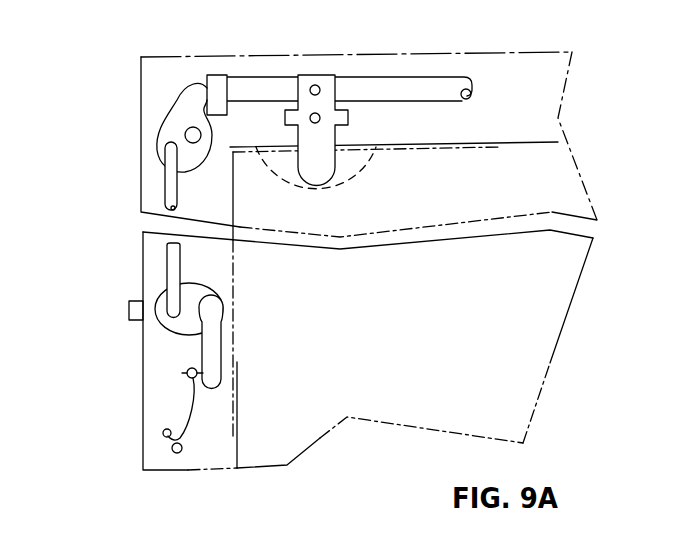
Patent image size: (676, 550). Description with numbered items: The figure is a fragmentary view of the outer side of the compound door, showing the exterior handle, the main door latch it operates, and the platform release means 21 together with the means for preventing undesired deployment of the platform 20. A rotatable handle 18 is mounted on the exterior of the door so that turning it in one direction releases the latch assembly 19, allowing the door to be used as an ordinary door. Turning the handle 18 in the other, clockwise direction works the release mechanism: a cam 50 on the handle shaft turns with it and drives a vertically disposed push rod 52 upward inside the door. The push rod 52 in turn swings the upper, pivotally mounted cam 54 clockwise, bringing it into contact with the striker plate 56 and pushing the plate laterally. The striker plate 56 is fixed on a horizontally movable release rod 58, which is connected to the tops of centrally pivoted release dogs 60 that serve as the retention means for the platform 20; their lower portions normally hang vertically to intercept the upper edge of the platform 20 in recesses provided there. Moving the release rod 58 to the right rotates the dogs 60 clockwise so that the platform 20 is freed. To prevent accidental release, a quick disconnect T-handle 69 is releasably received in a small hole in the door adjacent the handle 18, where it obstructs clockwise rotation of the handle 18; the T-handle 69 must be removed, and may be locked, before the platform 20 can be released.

The rotatable handle 18 is at (212, 353).
The latch assembly 19 is at (129, 311).
The platform 20 is at (505, 398).
The platform release means 21 is at (153, 82).
The cam 50 is at (183, 323).
The push rod 52 is at (175, 268).
The upper cam 54 is at (158, 138).
The striker plate 56 is at (215, 78).
The release rod 58 is at (432, 88).
The release dogs 60 is at (317, 78).
The quick disconnect T-handle 69 is at (192, 378).